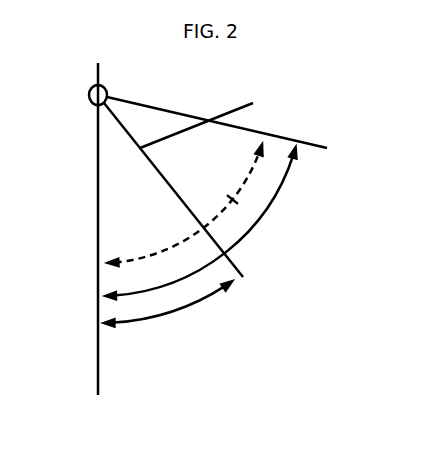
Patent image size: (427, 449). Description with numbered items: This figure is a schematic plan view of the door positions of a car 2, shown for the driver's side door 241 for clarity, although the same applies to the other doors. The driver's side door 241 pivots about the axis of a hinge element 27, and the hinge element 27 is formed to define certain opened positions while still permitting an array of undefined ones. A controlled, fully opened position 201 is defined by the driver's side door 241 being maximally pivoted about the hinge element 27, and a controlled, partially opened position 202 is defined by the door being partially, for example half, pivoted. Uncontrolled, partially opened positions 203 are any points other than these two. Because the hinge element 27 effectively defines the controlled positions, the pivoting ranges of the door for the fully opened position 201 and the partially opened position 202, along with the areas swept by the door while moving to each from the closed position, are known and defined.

The car 2 is at (98, 373).
The hinge element 27 is at (89, 95).
The driver's side door 241 is at (238, 124).
The controlled, fully opened position 201 is at (318, 143).
The controlled, partially opened position 202 is at (240, 272).
The uncontrolled, partially opened positions 203 is at (257, 222).